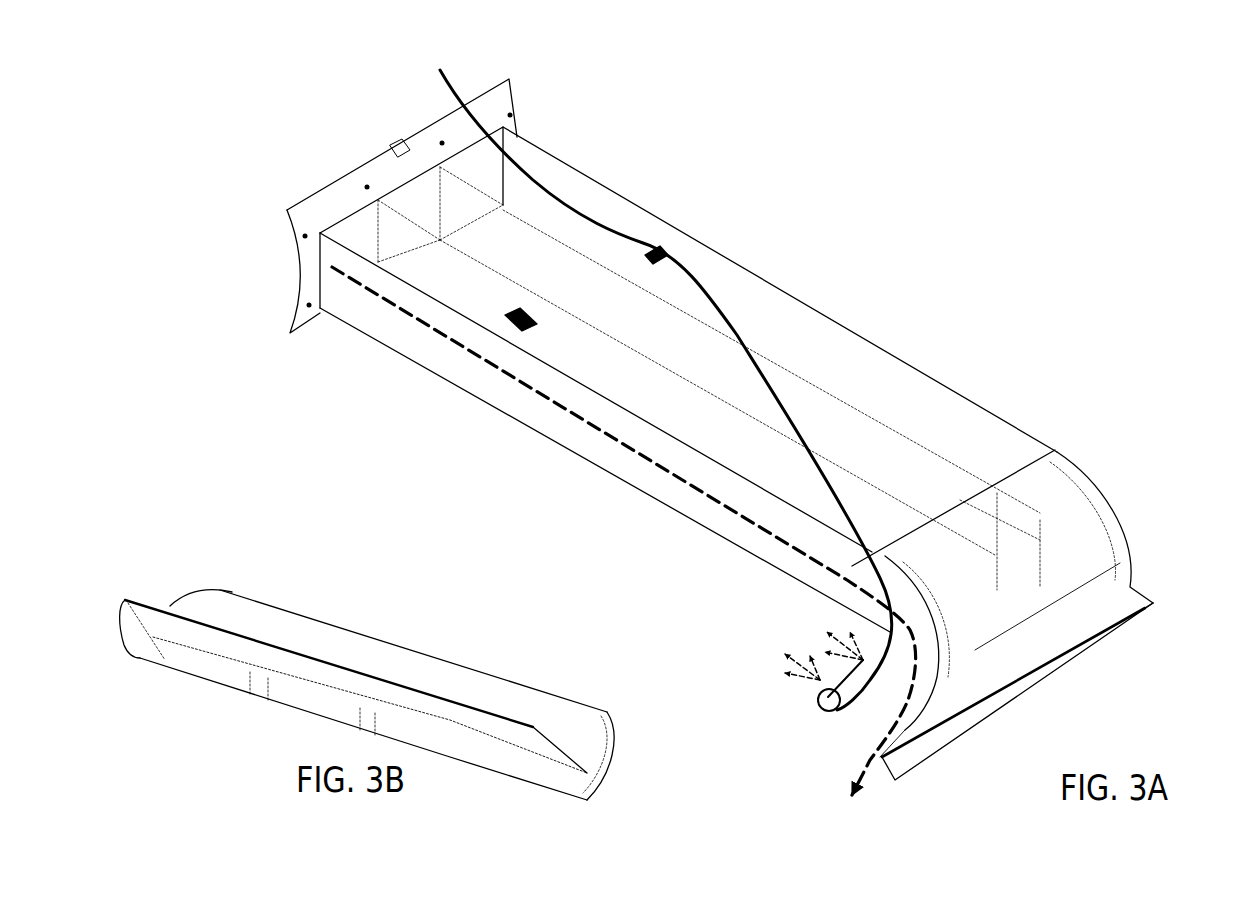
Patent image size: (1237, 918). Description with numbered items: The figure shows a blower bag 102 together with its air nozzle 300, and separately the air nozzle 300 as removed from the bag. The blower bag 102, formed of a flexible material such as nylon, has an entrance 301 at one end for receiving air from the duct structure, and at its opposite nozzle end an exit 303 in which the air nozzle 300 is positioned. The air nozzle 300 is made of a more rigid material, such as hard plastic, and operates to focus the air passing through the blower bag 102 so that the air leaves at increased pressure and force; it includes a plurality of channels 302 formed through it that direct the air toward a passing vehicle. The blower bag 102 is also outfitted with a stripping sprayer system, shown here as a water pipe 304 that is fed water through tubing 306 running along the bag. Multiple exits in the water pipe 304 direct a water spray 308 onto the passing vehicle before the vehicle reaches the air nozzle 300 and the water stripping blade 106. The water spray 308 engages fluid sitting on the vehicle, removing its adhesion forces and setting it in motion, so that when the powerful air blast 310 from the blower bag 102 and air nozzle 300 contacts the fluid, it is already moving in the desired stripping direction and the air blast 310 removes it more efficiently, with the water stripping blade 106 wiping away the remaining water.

In FIG. 3A, the blower bag 102 is at (750, 290).
In FIG. 3A, the water stripping blade 106 is at (1097, 662).
In FIG. 3A, the air nozzle 300 is at (1077, 620).
In FIG. 3B, the air nozzle 300 is at (400, 648).
In FIG. 3A, the entrance 301 is at (330, 253).
In FIG. 3B, the channels 302 is at (290, 697).
In FIG. 3A, the exit 303 is at (873, 760).
In FIG. 3A, the water pipe 304 is at (824, 702).
In FIG. 3A, the tubing 306 is at (588, 207).
In FIG. 3A, the water spray 308 is at (780, 660).
In FIG. 3A, the air blast 310 is at (863, 773).